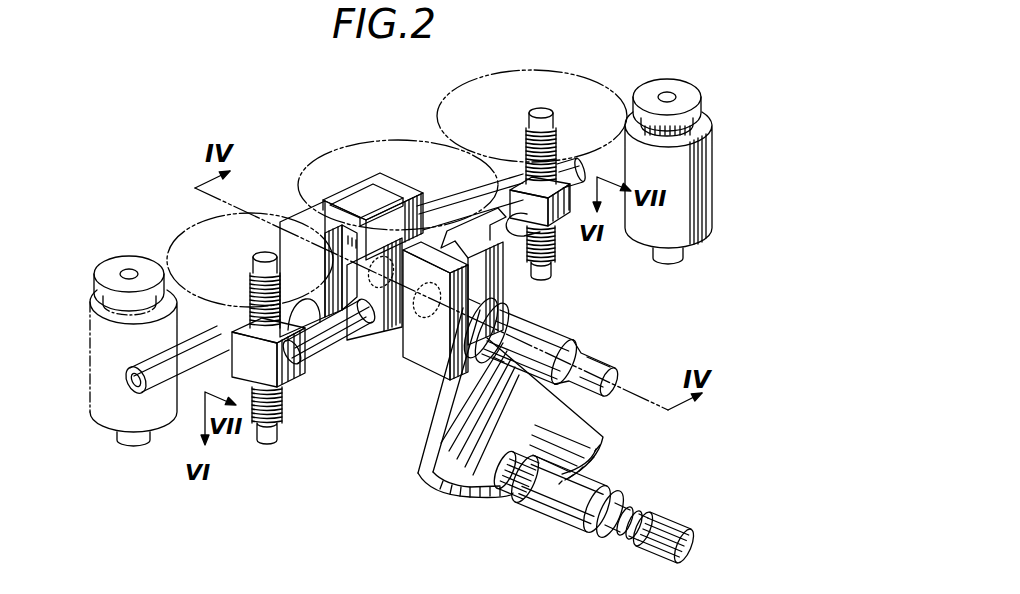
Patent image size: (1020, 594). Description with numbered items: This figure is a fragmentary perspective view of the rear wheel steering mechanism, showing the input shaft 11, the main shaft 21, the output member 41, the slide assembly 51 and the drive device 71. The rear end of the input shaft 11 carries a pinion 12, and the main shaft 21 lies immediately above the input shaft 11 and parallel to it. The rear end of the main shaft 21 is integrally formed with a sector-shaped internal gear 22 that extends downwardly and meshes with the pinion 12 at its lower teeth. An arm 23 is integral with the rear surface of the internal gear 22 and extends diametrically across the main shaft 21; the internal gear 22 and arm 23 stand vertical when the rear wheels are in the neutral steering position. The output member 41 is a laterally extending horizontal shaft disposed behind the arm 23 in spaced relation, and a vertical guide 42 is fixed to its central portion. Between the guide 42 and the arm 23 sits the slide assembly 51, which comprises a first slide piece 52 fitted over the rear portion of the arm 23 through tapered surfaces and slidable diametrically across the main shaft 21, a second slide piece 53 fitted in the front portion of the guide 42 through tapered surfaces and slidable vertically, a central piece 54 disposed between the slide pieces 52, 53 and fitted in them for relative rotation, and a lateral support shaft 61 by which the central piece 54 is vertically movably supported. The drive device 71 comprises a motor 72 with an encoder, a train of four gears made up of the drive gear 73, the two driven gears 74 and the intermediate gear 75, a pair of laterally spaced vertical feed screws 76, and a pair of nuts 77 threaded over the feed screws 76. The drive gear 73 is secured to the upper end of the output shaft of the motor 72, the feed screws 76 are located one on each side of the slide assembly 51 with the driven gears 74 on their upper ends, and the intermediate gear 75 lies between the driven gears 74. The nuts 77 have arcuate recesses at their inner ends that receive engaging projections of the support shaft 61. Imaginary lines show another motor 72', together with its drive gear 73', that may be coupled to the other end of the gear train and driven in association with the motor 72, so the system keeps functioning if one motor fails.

The input shaft 11 is at (568, 512).
The pinion 12 is at (500, 455).
The main shaft 21 is at (553, 341).
The sector-shaped internal gear 22 is at (495, 486).
The arm 23 is at (492, 283).
The output member 41 is at (212, 328).
The guide 42 is at (297, 224).
The slide assembly 51 is at (367, 393).
The first slide piece 52 is at (430, 368).
The second slide piece 53 is at (360, 180).
The central piece 54 is at (374, 342).
The lateral support shaft 61 is at (340, 324).
The drive device 71 is at (596, 66).
The motor 72 is at (686, 188).
The another motor 72' is at (116, 375).
The drive gear 73 is at (667, 87).
The roller cap (phantom) 73' is at (118, 268).
The driven gears 74 is at (478, 74).
The intermediate gear 75 is at (407, 140).
The feed screws 76 is at (553, 262).
The nuts 77 is at (533, 192).